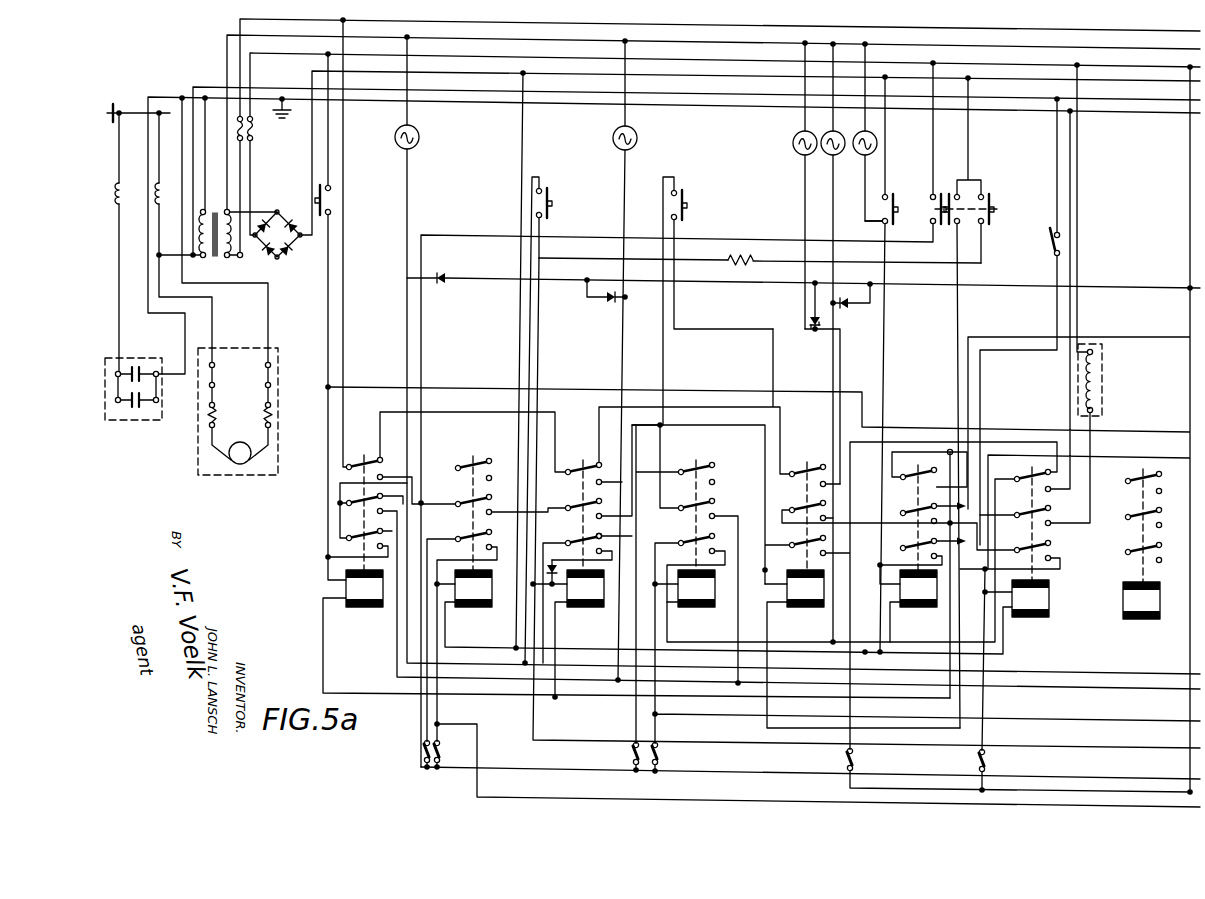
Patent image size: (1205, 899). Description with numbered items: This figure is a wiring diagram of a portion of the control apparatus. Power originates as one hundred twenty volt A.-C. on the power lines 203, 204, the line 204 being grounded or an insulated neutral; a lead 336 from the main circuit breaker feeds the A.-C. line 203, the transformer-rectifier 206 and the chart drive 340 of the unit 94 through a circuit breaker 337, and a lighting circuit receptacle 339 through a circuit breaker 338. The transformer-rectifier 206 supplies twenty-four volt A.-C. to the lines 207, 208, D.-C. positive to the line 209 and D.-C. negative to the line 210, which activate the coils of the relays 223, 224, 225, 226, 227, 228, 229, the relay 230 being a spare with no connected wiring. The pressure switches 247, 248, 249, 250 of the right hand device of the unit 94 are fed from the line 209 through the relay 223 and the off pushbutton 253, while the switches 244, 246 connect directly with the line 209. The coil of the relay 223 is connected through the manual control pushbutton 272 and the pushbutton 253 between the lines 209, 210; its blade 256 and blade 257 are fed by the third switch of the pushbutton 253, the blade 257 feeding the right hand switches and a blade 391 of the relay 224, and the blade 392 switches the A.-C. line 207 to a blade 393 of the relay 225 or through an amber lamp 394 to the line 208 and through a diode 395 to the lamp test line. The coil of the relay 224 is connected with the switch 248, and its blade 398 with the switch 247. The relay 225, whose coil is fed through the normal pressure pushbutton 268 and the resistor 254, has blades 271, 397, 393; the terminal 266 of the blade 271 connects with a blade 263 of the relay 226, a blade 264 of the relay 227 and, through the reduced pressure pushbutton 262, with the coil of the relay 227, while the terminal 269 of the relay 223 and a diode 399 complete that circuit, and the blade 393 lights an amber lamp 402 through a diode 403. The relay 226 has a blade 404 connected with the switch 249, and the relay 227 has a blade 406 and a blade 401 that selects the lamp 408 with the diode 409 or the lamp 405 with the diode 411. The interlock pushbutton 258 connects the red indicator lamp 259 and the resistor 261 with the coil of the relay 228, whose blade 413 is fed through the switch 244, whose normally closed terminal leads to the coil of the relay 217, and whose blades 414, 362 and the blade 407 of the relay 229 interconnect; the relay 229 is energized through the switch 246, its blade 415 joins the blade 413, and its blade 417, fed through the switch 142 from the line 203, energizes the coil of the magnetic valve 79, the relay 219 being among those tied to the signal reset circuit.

The A.-C. line 207 is at (308, 20).
The A.-C. line 208 is at (308, 37).
The D.-C. positive line 209 is at (308, 54).
The D.-C. negative line 210 is at (353, 72).
The A.-C. power line 203 is at (216, 96).
The lead 336 is at (115, 102).
The circuit breaker 338 is at (132, 173).
The circuit breaker 337 is at (171, 173).
The power line 204 is at (278, 110).
The transformer-rectifier 206 is at (277, 259).
The manual control pushbutton 272 is at (324, 200).
The lighting circuit receptacle 339 is at (154, 358).
The unit 94 is at (276, 348).
The chart drive 340 is at (240, 464).
The amber lamp 394 is at (420, 137).
The amber lamp 402 is at (638, 138).
The lamp 405 is at (793, 141).
The lamp 408 is at (833, 131).
The red indicator lamp 259 is at (875, 135).
The normal pressure pushbutton 268 is at (548, 203).
The reduced pressure pushbutton 262 is at (681, 200).
The interlock pushbutton 258 is at (893, 195).
The off pushbutton 253 is at (992, 195).
The switch 142 is at (1053, 253).
The resistor 261 is at (863, 231).
The resistor 254 is at (736, 261).
The diode 395 is at (443, 277).
The diode 403 is at (606, 302).
The diode 409 is at (846, 307).
The diode 411 is at (808, 318).
The diode 399 is at (580, 556).
The relay 223 is at (385, 588).
The blade 392 is at (361, 465).
The terminal 269 is at (347, 538).
The blade 257 is at (338, 503).
The blade 256 is at (328, 557).
The relay 224 is at (496, 588).
The blade 391 is at (464, 503).
The blade 398 is at (464, 537).
The relay 225 is at (608, 588).
The blade 393 is at (572, 468).
The blade 397 is at (577, 507).
The blade 271 is at (576, 542).
The terminal 266 is at (603, 514).
The relay 226 is at (719, 588).
The blade 263 is at (700, 496).
The blade 404 is at (682, 530).
The relay 227 is at (828, 588).
The blade 401 is at (812, 471).
The blade 406 is at (806, 509).
The blade 264 is at (800, 548).
The relay 228 is at (941, 588).
The blade 414 is at (927, 471).
The blade 413 is at (916, 512).
The blade 362 is at (912, 550).
The relay 217 is at (950, 449).
The relay 219 is at (985, 566).
The relay 229 is at (1050, 602).
The blade 407 is at (1031, 478).
The blade 417 is at (1030, 516).
The blade 415 is at (1030, 553).
The magnetic valve 79 is at (1101, 373).
The spare relay 230 is at (1120, 595).
The switch 247 is at (421, 753).
The switch 248 is at (440, 750).
The switch 249 is at (633, 753).
The switch 250 is at (658, 752).
The switch 244 is at (845, 752).
The switch 246 is at (977, 755).